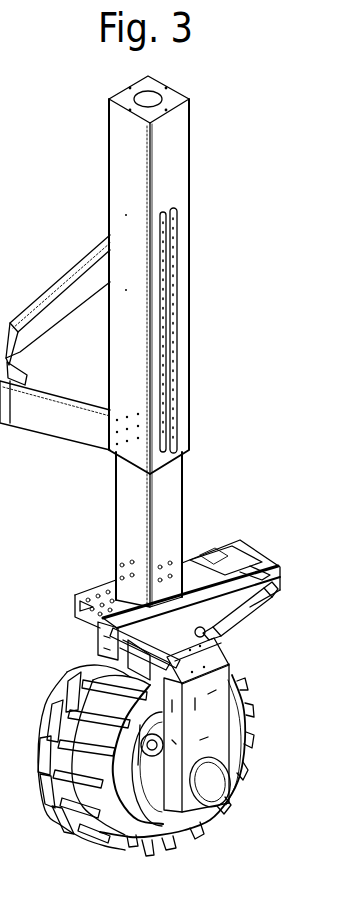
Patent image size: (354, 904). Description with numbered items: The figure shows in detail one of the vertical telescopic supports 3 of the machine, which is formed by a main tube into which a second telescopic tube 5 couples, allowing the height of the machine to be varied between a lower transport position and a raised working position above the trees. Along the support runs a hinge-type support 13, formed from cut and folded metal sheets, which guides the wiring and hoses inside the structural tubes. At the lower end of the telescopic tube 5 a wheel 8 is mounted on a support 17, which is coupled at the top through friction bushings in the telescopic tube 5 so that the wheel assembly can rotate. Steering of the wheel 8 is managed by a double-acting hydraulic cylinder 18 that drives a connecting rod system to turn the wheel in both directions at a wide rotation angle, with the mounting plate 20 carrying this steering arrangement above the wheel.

The vertical telescopic support 3 is at (177, 158).
The telescopic tube 5 is at (177, 493).
The support 13 is at (84, 252).
The mounting plate 20 is at (240, 550).
The cylinder 18 is at (237, 616).
The support 17 is at (256, 704).
The wheel 8 is at (67, 690).